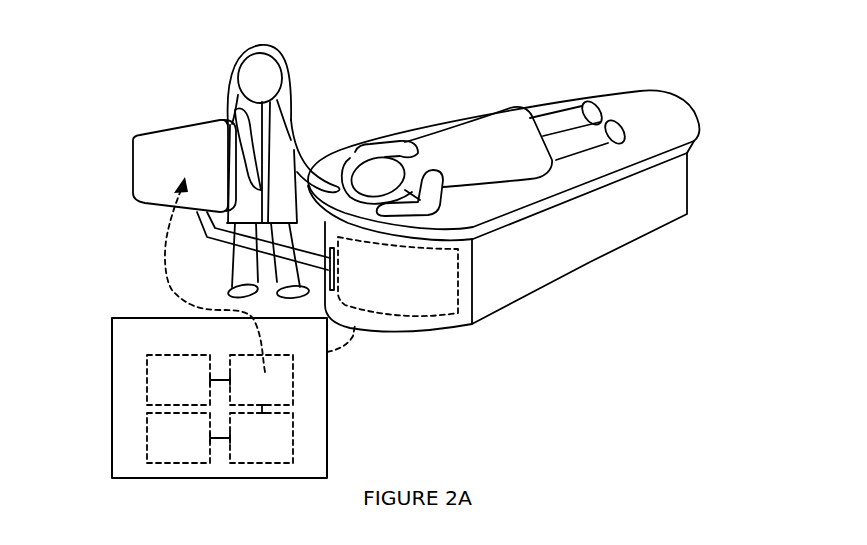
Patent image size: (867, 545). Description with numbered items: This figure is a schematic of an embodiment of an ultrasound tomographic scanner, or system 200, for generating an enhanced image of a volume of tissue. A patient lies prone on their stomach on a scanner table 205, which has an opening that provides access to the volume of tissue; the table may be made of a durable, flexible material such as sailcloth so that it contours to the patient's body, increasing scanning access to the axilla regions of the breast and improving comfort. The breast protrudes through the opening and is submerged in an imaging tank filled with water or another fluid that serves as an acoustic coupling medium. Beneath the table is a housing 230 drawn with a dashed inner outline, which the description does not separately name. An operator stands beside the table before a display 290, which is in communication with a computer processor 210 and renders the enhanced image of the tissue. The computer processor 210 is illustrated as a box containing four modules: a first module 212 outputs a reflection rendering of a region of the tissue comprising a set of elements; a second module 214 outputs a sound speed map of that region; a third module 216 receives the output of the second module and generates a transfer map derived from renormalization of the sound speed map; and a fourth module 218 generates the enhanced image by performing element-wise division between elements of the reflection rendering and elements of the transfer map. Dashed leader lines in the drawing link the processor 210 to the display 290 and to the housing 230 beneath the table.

The ultrasound tomographic scanner 200 is at (440, 65).
The scanner table 205 is at (650, 118).
The computer processor 210 is at (195, 346).
The first module 212 is at (193, 390).
The second module 214 is at (193, 448).
The third module 216 is at (276, 448).
The fourth module 218 is at (276, 390).
The table base housing 230 is at (413, 292).
The display 290 is at (163, 163).